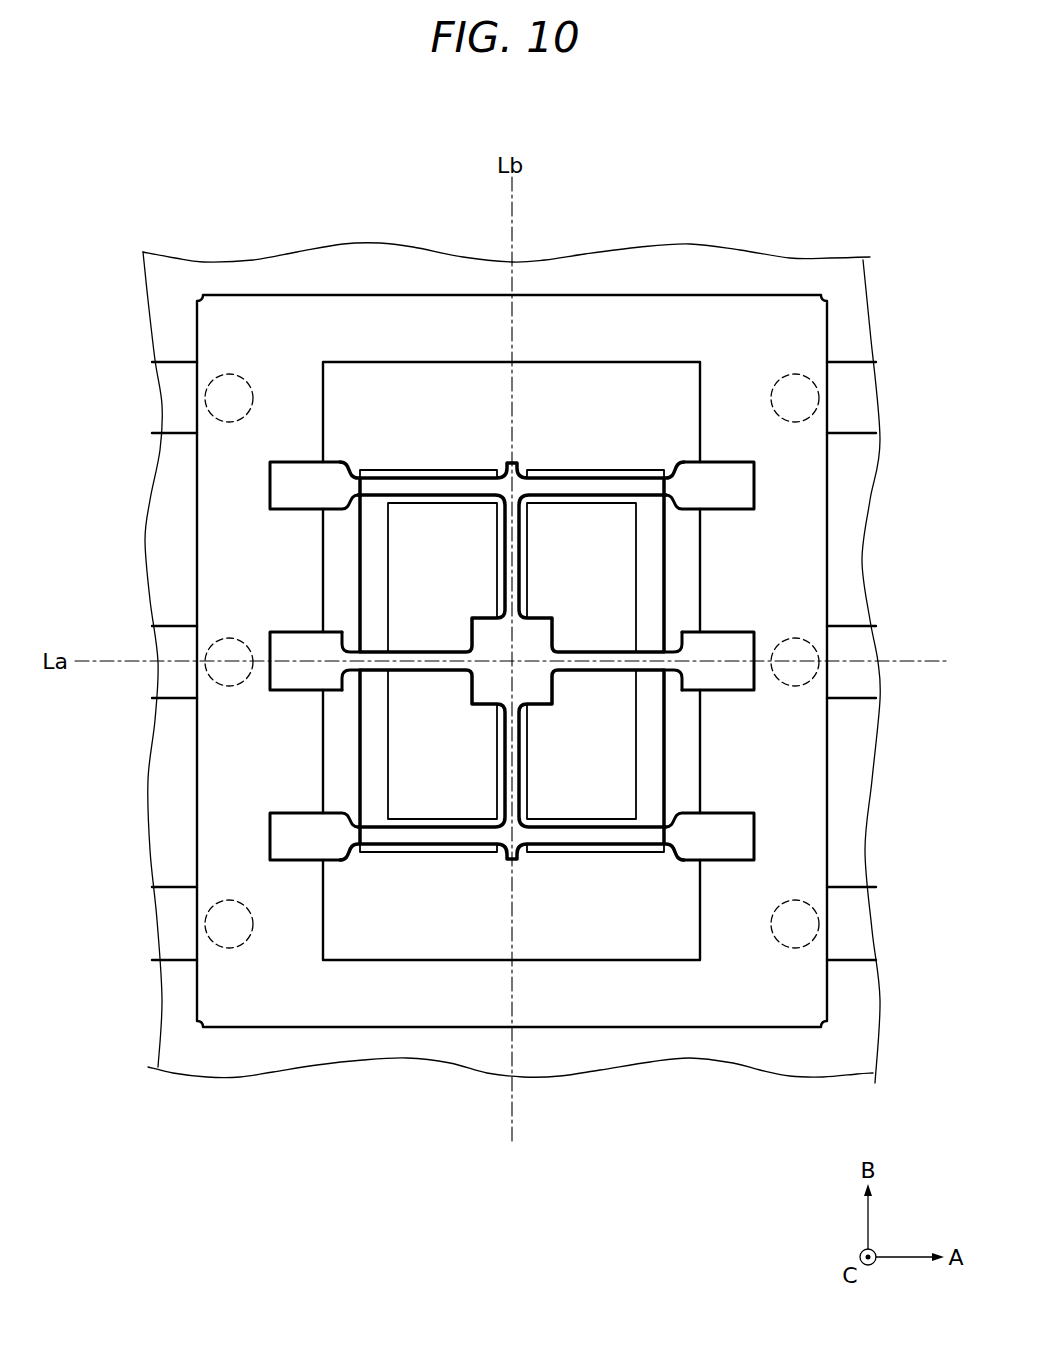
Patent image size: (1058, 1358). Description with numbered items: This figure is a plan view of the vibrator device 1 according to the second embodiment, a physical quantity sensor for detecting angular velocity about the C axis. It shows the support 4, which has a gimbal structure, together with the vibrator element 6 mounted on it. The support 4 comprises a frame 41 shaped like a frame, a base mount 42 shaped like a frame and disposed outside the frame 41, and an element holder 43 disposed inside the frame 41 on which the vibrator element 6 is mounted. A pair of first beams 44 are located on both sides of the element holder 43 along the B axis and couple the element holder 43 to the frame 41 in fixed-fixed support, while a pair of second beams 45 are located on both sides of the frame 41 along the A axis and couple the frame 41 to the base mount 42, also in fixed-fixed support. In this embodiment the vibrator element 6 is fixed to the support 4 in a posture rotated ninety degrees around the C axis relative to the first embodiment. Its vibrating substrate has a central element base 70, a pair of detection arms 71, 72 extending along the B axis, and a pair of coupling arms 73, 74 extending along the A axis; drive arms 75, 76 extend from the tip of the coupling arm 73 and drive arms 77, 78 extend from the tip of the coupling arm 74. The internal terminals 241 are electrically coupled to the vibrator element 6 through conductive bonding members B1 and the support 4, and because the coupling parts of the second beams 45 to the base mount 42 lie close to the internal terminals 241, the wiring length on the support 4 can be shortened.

The vibrator device 1 is at (111, 169).
The support 4 is at (707, 290).
The vibrator element 6 is at (423, 860).
The frame 41 is at (603, 468).
The base mount 42 is at (368, 295).
The element holder 43 is at (549, 615).
The first beam 44 is at (505, 555).
The second beam 45 is at (353, 643).
The element base 70 is at (530, 675).
The detection arm 71 is at (300, 675).
The detection arm 72 is at (724, 675).
The coupling arm 73 is at (519, 558).
The coupling arm 74 is at (519, 775).
The drive arm 75 is at (290, 487).
The drive arm 76 is at (737, 484).
The drive arm 77 is at (292, 836).
The drive arm 78 is at (740, 838).
The internal terminal 241 is at (178, 388).
The bonding member B1 is at (227, 406).